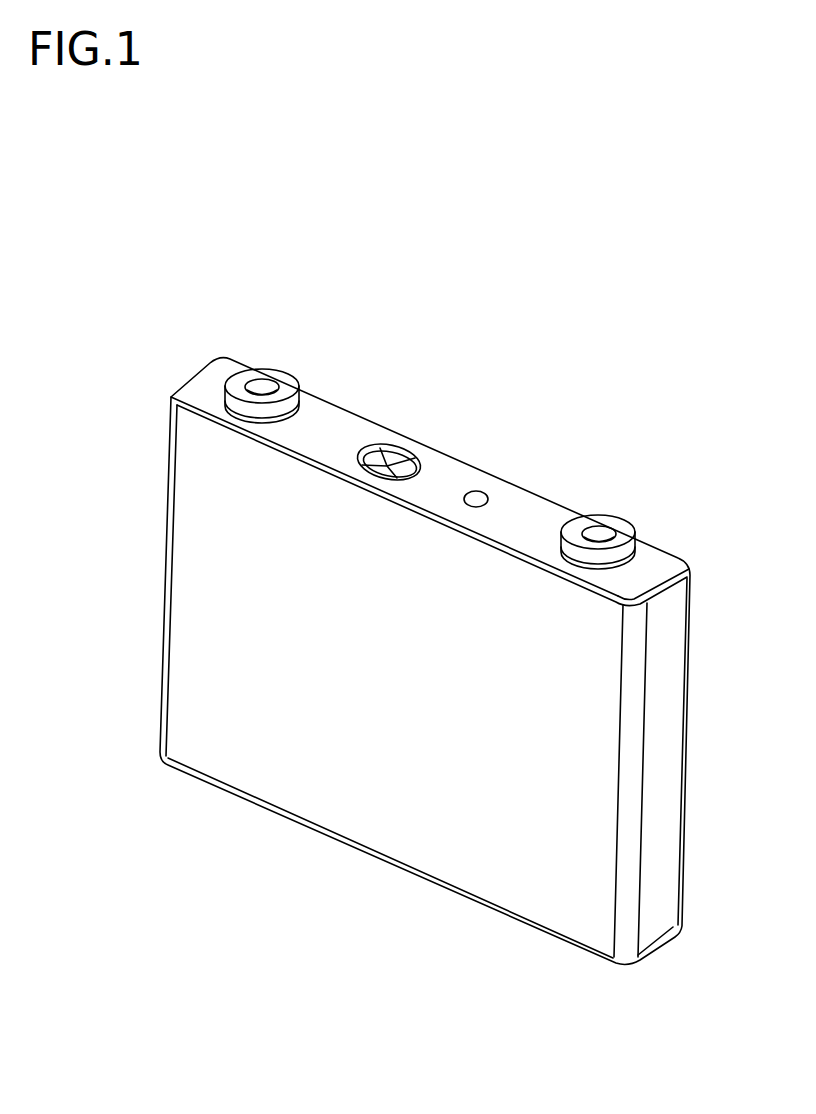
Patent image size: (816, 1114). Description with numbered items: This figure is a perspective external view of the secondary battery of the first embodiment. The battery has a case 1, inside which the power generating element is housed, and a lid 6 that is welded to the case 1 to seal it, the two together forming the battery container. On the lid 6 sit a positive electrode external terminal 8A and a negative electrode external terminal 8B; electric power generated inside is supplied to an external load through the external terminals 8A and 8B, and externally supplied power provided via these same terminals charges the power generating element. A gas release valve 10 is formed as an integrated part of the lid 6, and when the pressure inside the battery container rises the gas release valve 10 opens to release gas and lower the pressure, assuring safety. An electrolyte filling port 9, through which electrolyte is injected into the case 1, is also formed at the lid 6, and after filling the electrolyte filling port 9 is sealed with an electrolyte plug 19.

The case 1 is at (672, 762).
The lid 6 is at (543, 511).
The positive electrode external terminal 8A is at (267, 365).
The negative electrode external terminal 8B is at (618, 520).
The electrolyte filling port 9 is at (518, 462).
The electrolyte plug 19 is at (483, 492).
The gas release valve 10 is at (393, 455).